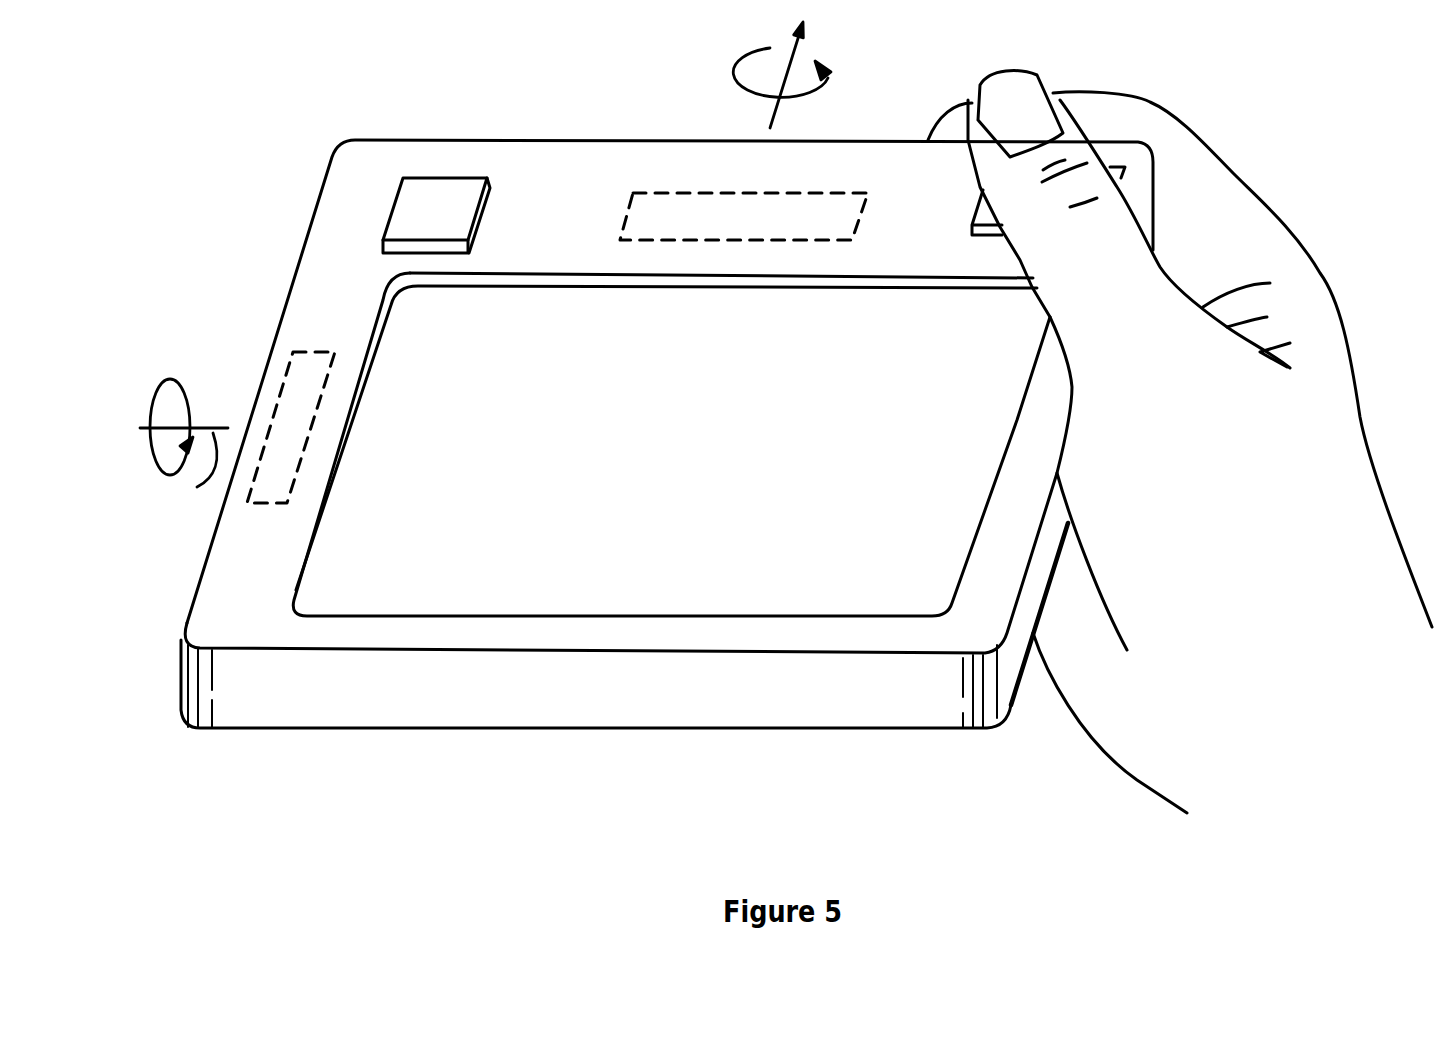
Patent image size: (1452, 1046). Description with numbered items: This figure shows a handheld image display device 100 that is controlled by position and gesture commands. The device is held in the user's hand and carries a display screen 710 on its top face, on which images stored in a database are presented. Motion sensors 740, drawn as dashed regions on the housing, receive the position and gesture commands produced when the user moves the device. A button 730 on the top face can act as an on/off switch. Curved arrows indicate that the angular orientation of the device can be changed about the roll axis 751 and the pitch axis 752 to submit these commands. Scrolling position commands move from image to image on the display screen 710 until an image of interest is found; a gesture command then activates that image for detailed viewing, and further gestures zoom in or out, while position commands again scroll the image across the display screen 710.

The handheld electronic device 100 is at (808, 744).
The display screen 710 is at (673, 615).
The button 730 is at (435, 178).
The motion sensors 740 is at (678, 193).
The roll axis 751 is at (777, 113).
The pitch axis 752 is at (184, 449).